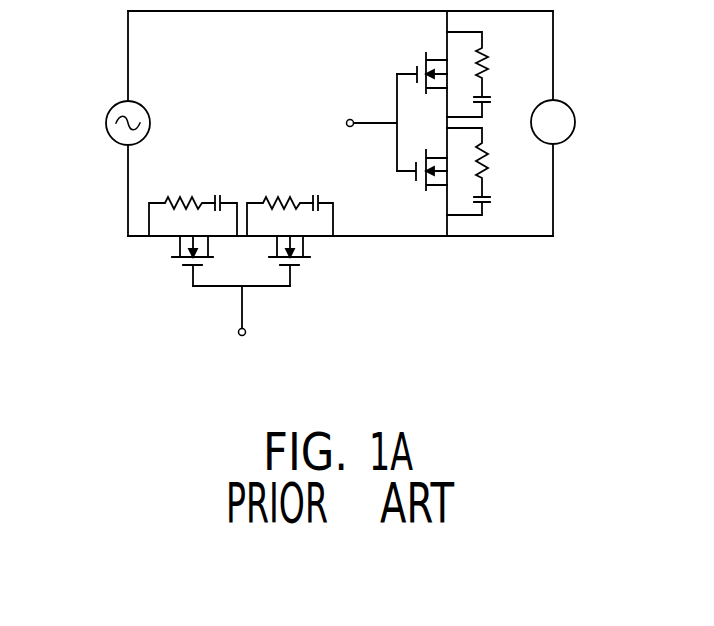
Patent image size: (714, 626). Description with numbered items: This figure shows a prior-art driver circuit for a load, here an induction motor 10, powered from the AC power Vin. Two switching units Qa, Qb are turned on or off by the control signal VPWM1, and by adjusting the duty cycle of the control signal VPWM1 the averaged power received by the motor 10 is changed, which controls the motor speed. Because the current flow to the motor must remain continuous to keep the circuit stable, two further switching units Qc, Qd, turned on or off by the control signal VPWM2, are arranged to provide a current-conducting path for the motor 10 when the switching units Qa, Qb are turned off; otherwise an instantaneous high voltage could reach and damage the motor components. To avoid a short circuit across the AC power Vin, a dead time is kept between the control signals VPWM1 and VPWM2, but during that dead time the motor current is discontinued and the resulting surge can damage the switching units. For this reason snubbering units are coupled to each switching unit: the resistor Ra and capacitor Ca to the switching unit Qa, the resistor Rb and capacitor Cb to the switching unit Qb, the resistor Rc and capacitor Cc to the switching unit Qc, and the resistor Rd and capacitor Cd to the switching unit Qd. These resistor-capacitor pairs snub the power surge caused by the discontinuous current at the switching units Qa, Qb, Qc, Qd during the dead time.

The induction motor 10 is at (563, 100).
The AC power Vin is at (116, 110).
The resistor Ra is at (182, 201).
The capacitor Ca is at (222, 201).
The resistor Rb is at (280, 201).
The capacitor Cb is at (319, 201).
The switching unit Qa is at (176, 261).
The switching unit Qb is at (304, 261).
The switching unit Qc is at (421, 183).
The switching unit Qd is at (421, 64).
The resistor Rc is at (482, 162).
The capacitor Cc is at (482, 199).
The resistor Rd is at (482, 64).
The capacitor Cd is at (482, 101).
The control signal VPWM1 is at (247, 314).
The control signal VPWM2 is at (343, 122).